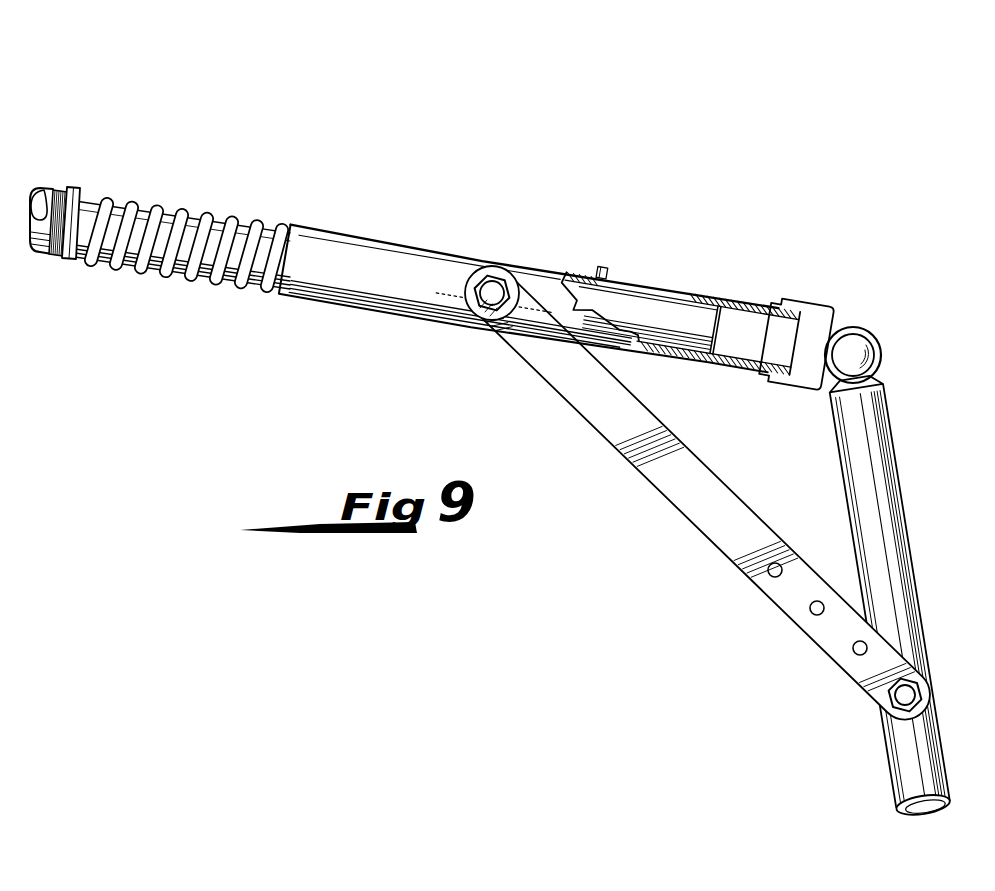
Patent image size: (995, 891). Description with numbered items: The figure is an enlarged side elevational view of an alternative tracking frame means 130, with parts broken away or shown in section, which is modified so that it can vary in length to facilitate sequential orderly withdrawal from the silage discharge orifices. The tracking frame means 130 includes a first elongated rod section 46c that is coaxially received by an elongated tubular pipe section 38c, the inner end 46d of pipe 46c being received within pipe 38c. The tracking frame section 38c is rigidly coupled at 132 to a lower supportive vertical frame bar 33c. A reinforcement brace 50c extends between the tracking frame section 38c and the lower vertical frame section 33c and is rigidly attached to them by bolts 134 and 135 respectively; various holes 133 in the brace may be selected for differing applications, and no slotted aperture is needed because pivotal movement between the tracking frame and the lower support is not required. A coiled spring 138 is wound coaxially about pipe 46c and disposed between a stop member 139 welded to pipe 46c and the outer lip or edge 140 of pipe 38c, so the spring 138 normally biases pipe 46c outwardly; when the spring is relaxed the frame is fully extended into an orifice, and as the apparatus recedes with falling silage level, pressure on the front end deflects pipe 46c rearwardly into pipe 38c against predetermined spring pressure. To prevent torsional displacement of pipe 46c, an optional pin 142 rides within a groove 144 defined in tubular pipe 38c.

The tracking frame means 130 is at (492, 188).
The elongated tubular pipe section 38c is at (356, 243).
The groove 144 is at (655, 291).
The inner end 46d is at (716, 334).
The pin 142 is at (604, 272).
The rigid coupling 132 is at (861, 318).
The lower supportive vertical frame bar 33c is at (853, 455).
The reinforcement brace 50c is at (592, 418).
The bolt 134 is at (497, 290).
The holes 133 is at (853, 650).
The bolt 135 is at (897, 701).
The first elongated rod section 46c is at (48, 252).
The stop member 139 is at (72, 187).
The coiled spring 138 is at (205, 276).
The outer lip or edge 140 is at (278, 295).